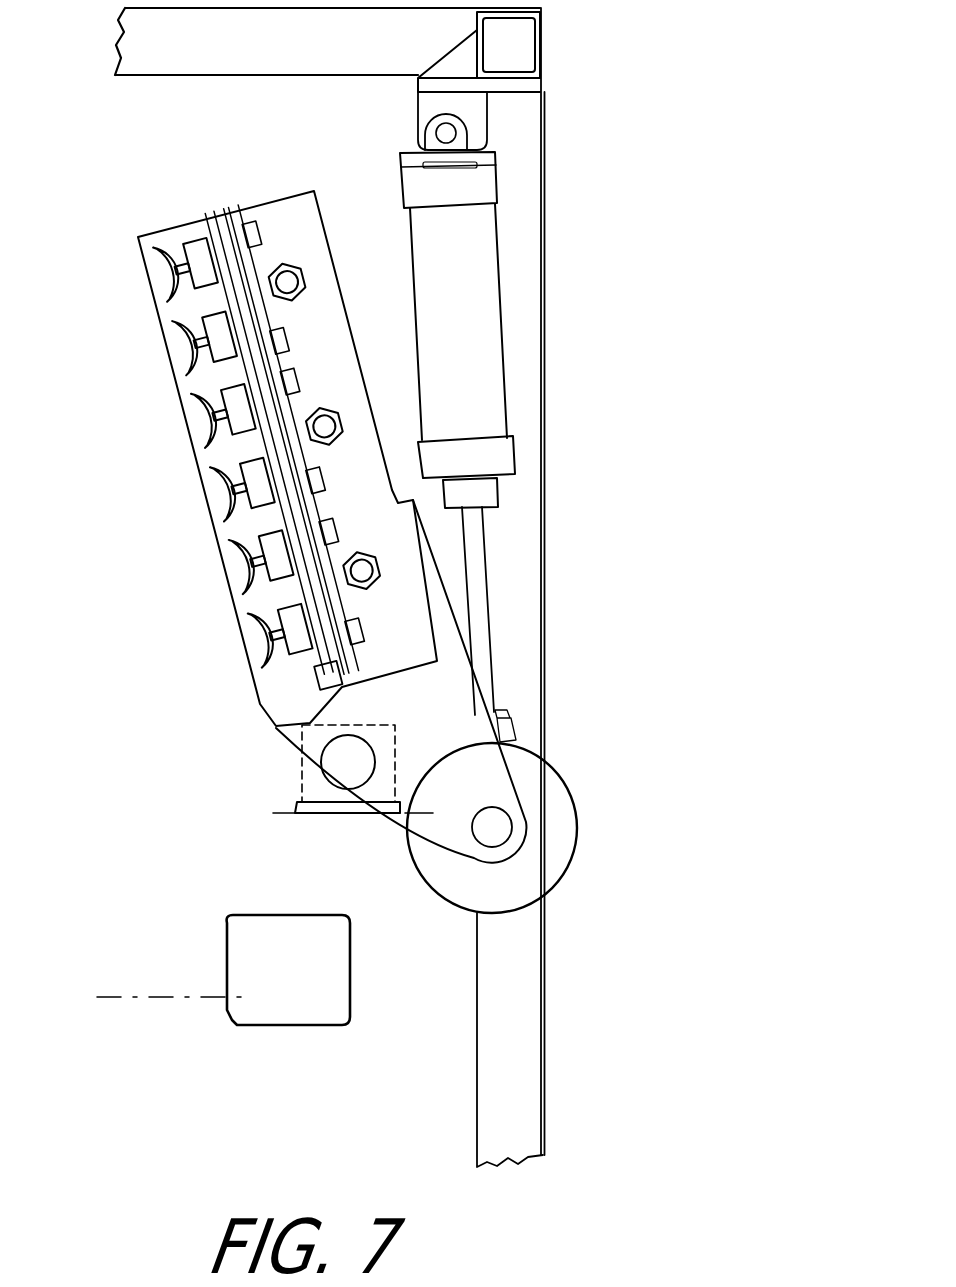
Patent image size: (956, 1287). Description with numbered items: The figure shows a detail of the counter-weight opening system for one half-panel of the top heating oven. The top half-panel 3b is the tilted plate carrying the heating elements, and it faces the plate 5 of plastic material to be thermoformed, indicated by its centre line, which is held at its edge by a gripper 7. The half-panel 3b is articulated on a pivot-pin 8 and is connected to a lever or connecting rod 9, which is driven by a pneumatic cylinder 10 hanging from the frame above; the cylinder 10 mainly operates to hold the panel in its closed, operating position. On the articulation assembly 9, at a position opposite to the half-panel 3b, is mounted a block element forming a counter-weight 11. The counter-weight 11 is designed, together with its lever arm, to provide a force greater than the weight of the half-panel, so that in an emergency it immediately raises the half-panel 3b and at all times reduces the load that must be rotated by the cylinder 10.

The top panel half-panel portion 3b is at (345, 383).
The plate of material to be thermoformed 5 is at (118, 997).
The gripper 7 is at (299, 1002).
The pivot-pin 8 is at (348, 757).
The lever or connecting rod 9 is at (437, 718).
The pneumatic cylinder 10 is at (478, 306).
The counter-weight block element 11 is at (408, 858).